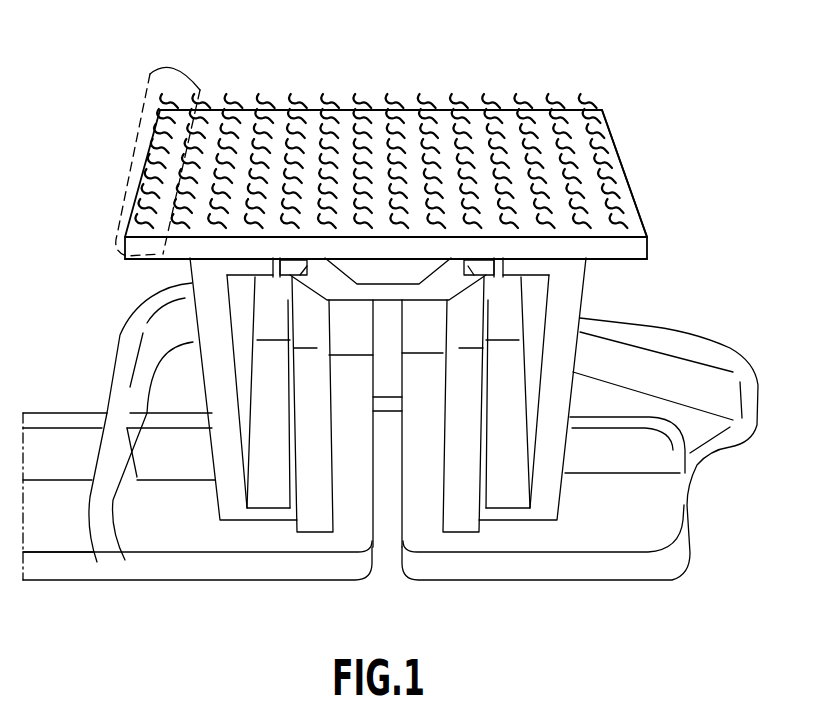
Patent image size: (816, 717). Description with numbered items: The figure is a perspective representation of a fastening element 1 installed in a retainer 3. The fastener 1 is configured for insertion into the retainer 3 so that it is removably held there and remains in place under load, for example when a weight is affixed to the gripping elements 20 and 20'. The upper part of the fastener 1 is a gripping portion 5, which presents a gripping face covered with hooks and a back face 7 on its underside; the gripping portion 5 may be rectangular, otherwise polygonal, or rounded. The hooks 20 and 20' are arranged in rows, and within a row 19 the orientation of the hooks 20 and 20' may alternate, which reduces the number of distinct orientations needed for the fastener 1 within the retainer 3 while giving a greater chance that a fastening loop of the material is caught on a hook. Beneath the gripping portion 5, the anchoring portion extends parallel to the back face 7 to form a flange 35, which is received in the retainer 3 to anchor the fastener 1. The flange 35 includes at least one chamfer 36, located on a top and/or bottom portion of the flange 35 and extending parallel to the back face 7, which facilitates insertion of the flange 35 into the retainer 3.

The fastening element 1 is at (630, 156).
The retainer 3 is at (578, 292).
The gripping portion 5 is at (640, 215).
The back face 7 is at (625, 262).
The row of hooks 19 is at (182, 68).
The hooks 20 is at (502, 146).
The hooks 20' is at (254, 146).
The flange 35 is at (383, 290).
The chamfer 36 is at (290, 278).